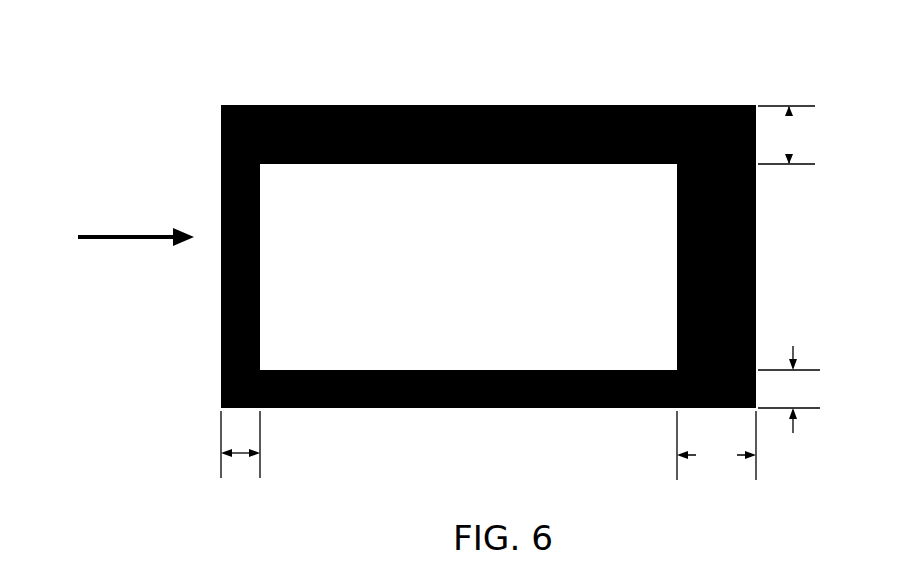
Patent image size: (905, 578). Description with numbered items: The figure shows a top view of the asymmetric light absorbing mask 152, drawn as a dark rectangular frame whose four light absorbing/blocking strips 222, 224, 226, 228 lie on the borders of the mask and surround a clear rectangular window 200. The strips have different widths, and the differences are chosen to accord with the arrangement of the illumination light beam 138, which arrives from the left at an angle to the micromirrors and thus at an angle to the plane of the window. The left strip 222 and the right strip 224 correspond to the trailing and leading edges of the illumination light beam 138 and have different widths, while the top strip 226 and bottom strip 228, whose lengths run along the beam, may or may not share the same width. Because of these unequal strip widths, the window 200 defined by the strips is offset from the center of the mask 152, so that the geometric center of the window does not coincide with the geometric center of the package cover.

The mask 152 is at (518, 82).
The illumination light beam 138 is at (133, 228).
The window 200 is at (503, 259).
The light absorbing strip 222 is at (213, 445).
The light absorbing strip 224 is at (716, 445).
The light absorbing strip 226 is at (786, 135).
The light absorbing strip 228 is at (789, 389).